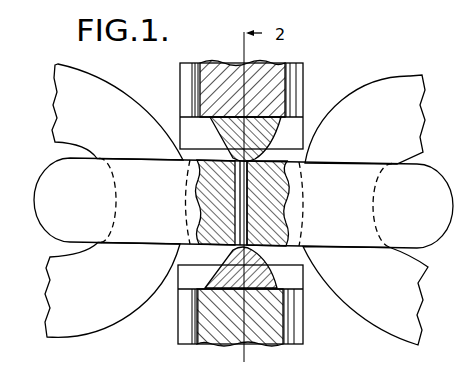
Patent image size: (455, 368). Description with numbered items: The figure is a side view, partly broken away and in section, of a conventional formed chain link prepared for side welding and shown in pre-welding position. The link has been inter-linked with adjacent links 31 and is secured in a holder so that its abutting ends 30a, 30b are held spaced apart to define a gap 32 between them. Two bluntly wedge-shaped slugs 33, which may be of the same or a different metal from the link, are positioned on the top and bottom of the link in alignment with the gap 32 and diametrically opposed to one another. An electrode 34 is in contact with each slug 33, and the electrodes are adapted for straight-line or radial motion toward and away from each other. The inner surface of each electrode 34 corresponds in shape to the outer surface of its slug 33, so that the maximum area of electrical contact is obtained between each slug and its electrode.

The abutting end 30a is at (198, 226).
The abutting end 30b is at (250, 217).
The adjacent links 31 is at (121, 90).
The gap 32 is at (238, 183).
The bluntly wedge-shaped slug 33 is at (283, 133).
The electrode 34 is at (277, 77).